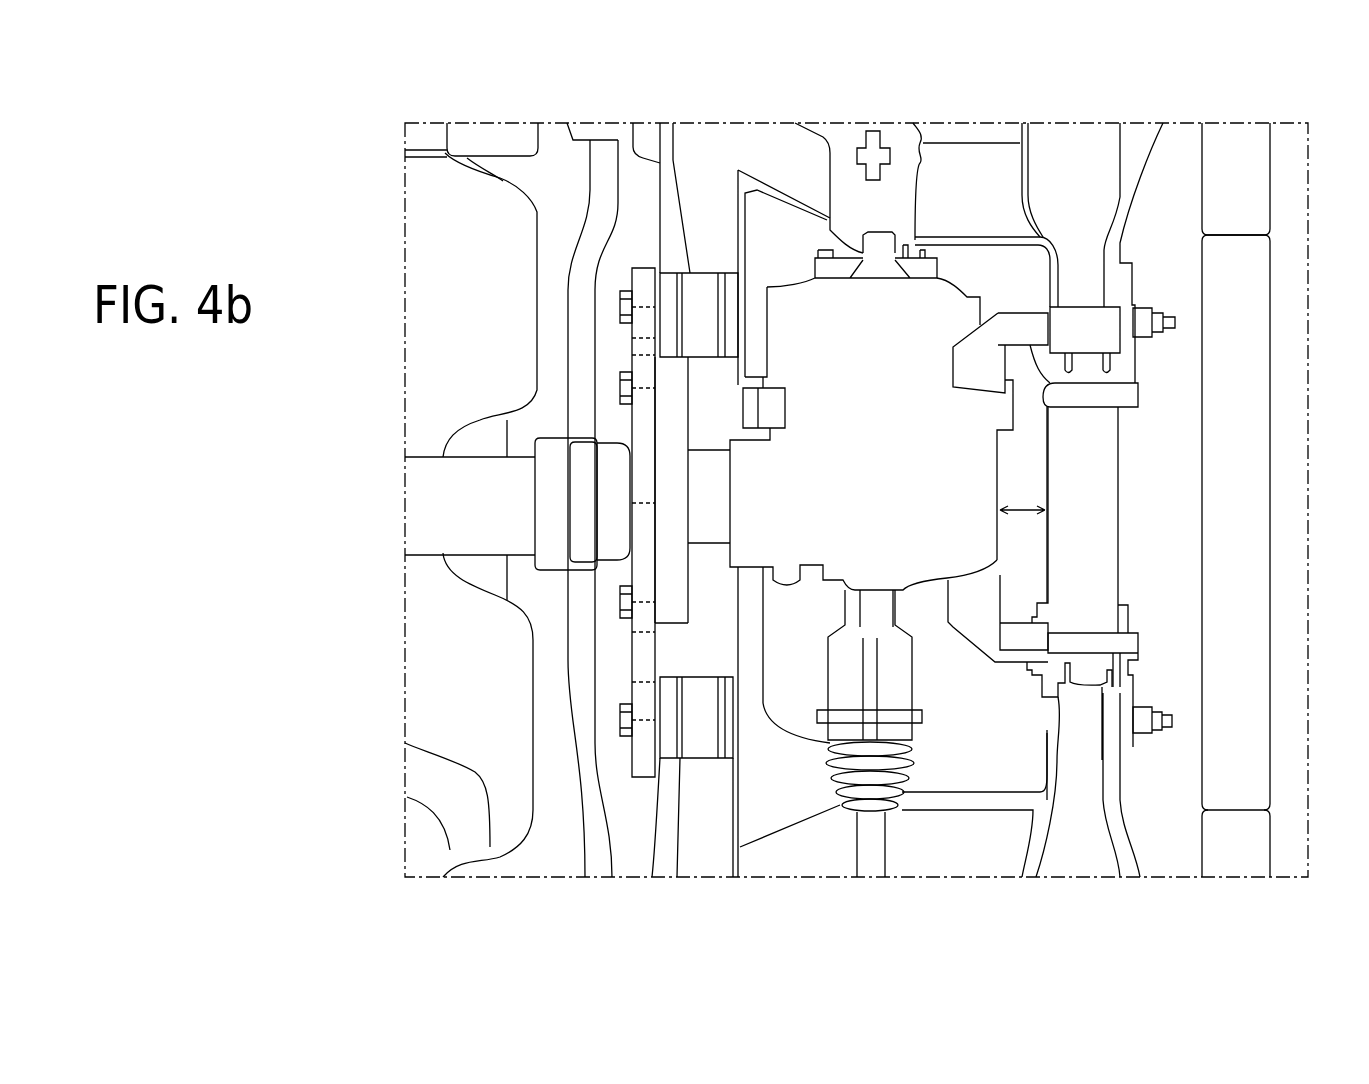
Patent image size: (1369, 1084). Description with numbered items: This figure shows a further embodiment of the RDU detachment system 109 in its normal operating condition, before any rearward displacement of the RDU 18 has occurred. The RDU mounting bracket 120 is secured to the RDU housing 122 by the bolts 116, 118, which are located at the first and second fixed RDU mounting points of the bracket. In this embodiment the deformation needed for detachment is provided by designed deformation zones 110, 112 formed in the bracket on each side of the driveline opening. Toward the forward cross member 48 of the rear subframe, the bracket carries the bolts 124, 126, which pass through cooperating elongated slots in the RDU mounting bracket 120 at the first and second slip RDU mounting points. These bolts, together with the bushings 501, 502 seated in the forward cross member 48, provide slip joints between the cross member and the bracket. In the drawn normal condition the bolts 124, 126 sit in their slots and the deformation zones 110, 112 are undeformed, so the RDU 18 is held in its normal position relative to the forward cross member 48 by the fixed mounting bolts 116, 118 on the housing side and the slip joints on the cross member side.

The RDU detachment system 109 is at (398, 113).
The forward cross member 48 is at (697, 180).
The bushing 501 is at (700, 297).
The bushing 502 is at (702, 738).
The bolt 124 is at (620, 307).
The deformation zone 110 is at (640, 350).
The bolt 116 is at (620, 388).
The RDU mounting bracket 120 is at (645, 428).
The bolt 126 is at (453, 502).
The bolt 118 is at (620, 603).
The deformation zone 112 is at (640, 660).
The RDU housing 122 is at (672, 577).
The RDU 18 is at (815, 615).